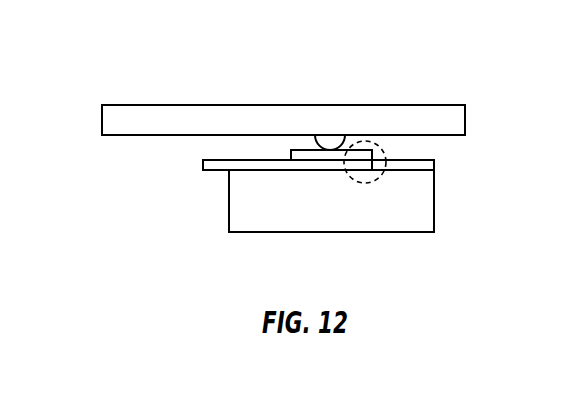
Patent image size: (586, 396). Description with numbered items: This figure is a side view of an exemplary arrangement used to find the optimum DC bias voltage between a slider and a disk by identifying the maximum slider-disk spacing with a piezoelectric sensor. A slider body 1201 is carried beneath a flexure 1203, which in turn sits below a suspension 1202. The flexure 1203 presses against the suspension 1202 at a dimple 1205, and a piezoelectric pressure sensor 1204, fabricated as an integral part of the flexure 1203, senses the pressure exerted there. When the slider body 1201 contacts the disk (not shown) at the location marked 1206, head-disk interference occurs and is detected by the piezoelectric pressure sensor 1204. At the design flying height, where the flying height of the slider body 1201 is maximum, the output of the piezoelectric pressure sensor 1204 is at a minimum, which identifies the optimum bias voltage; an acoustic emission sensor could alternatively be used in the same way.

The slider body 1201 is at (258, 233).
The suspension 1202 is at (123, 105).
The flexure 1203 is at (203, 162).
The piezoelectric pressure sensor 1204 is at (383, 162).
The dimple 1205 is at (330, 141).
The disk contact location 1206 is at (413, 240).